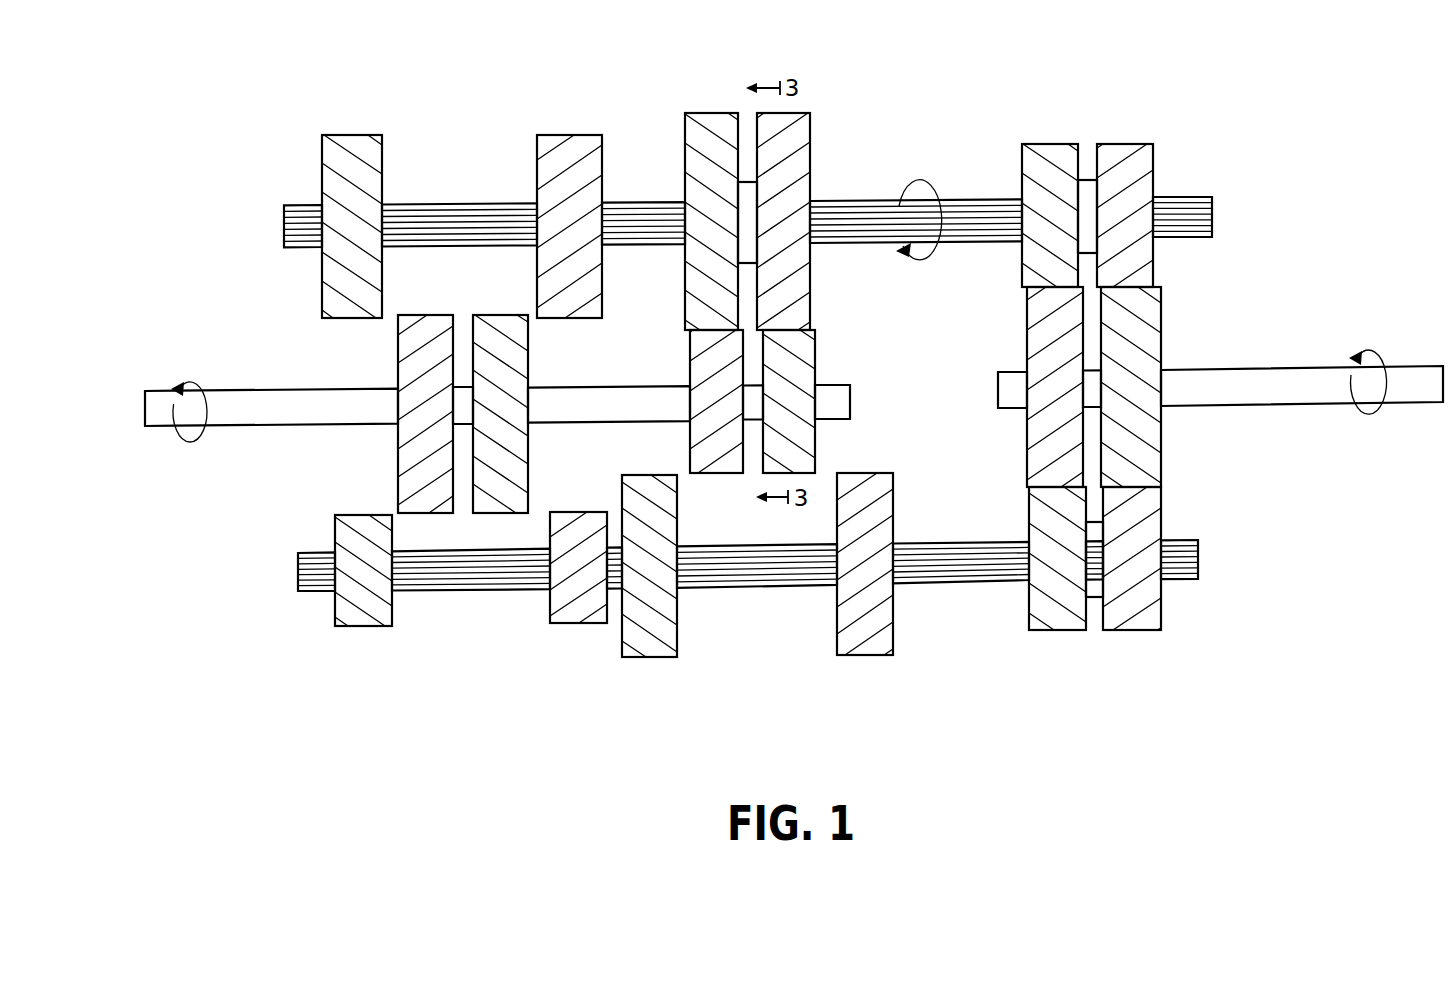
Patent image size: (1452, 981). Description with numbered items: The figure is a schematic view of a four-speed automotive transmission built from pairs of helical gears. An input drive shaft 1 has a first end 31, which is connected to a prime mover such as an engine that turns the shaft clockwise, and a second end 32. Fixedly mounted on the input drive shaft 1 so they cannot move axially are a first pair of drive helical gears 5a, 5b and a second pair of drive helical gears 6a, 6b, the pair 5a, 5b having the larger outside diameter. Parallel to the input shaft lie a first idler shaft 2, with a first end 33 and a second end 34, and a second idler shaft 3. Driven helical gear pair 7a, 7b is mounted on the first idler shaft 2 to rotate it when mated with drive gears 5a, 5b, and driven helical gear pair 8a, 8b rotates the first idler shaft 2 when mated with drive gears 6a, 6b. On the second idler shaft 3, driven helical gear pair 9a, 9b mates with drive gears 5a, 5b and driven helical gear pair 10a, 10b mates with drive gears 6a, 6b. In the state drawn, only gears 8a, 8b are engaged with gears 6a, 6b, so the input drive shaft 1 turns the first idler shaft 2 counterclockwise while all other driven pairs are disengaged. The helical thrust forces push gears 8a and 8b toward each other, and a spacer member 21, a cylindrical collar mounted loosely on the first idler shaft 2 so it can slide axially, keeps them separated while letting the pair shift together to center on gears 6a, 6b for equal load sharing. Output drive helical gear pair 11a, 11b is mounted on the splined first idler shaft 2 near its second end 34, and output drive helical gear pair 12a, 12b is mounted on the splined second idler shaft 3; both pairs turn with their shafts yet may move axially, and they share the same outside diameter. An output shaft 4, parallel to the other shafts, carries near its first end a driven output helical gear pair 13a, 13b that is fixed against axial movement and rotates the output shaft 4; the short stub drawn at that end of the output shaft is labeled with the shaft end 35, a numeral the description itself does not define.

The input drive shaft 1 is at (263, 390).
The first idler shaft 2 is at (442, 205).
The second idler shaft 3 is at (457, 592).
The output shaft 4 is at (1273, 367).
The drive helical gear 5a is at (419, 315).
The drive helical gear 5b is at (497, 315).
The drive helical gear 6a is at (712, 475).
The drive helical gear 6b is at (817, 455).
The driven helical gear 7a is at (357, 134).
The driven helical gear 7b is at (566, 134).
The driven helical gear 8a is at (704, 113).
The driven helical gear 8b is at (800, 113).
The driven helical gear 9a is at (365, 627).
The driven helical gear 9b is at (576, 624).
The driven helical gear 10a is at (647, 658).
The driven helical gear 10b is at (866, 656).
The output drive helical gear 11a is at (1041, 144).
The output drive helical gear 11b is at (1136, 143).
The output drive helical gear 12a is at (1055, 631).
The output drive helical gear 12b is at (1148, 631).
The driven output helical gear 13a is at (1027, 324).
The driven output helical gear 13b is at (1163, 347).
The spacer member 21 is at (748, 181).
The first end of input drive shaft 31 is at (145, 400).
The second end of input drive shaft 32 is at (852, 396).
The first end of idler shaft 33 is at (283, 228).
The second end of idler shaft 34 is at (1213, 217).
The bearing end portion of fourth shaft 35 is at (998, 397).